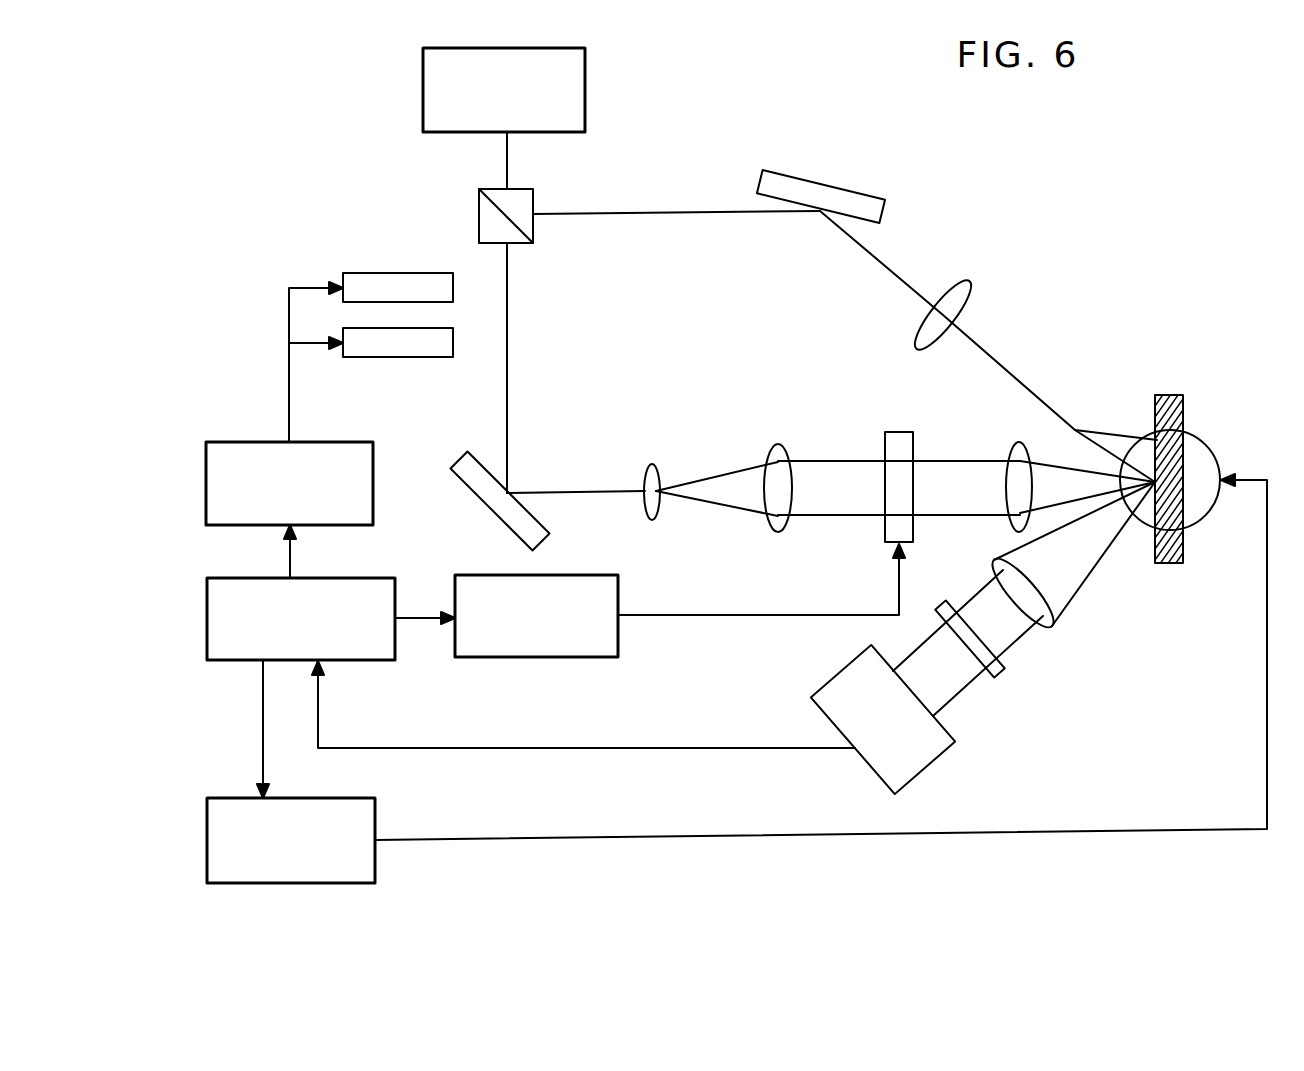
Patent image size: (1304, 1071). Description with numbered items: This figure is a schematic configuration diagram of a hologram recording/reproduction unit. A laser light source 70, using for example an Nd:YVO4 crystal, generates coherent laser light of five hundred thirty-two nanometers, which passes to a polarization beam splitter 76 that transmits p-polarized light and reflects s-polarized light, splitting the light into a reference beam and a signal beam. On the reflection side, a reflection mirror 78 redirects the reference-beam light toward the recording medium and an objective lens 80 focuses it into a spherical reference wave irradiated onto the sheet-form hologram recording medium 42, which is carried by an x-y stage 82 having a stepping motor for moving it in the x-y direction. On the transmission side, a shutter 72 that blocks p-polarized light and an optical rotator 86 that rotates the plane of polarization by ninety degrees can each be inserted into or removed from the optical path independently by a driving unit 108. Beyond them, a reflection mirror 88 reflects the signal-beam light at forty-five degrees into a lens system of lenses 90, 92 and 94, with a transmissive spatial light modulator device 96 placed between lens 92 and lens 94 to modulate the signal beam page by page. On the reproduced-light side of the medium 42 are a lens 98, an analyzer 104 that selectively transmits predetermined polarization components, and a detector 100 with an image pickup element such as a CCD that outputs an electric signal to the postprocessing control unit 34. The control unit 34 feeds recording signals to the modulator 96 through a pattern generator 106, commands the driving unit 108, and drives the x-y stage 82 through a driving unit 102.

The laser light source 70 is at (585, 90).
The polarization beam splitter 76 is at (536, 203).
The reflection mirror 78 is at (826, 191).
The objective lens 80 is at (962, 302).
The shutter 72 is at (388, 284).
The optical rotator 86 is at (405, 350).
The driving unit 108 is at (226, 452).
The reflection mirror 88 is at (474, 487).
The lens 90 is at (660, 472).
The lens 92 is at (782, 458).
The transmissive spatial light modulator device 96 is at (898, 442).
The lens 94 is at (1013, 452).
The hologram recording medium 42 is at (1185, 416).
The x-y stage 82 is at (1197, 510).
The lens 98 is at (1050, 618).
The analyzer 104 is at (1000, 670).
The detector 100 is at (913, 764).
The pattern generator 106 is at (536, 660).
The postprocessing control unit 34 is at (228, 656).
The driving unit 102 is at (323, 881).